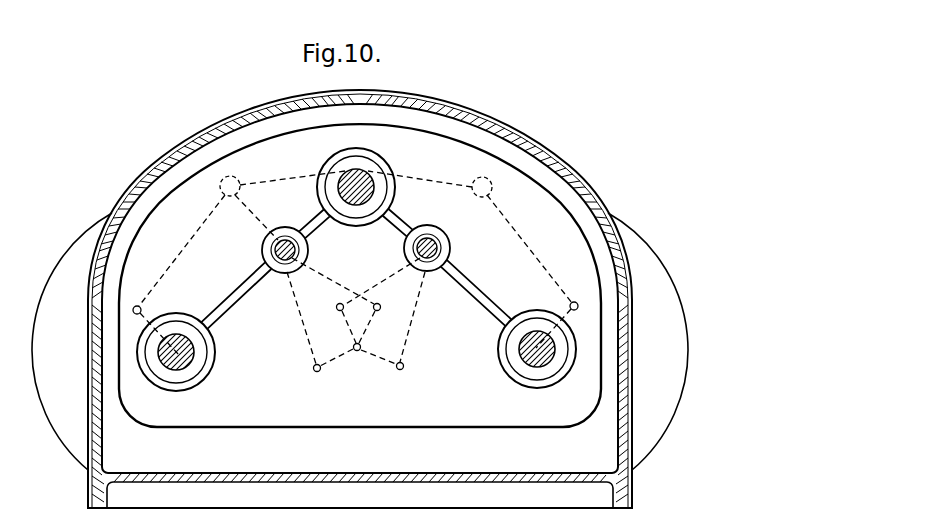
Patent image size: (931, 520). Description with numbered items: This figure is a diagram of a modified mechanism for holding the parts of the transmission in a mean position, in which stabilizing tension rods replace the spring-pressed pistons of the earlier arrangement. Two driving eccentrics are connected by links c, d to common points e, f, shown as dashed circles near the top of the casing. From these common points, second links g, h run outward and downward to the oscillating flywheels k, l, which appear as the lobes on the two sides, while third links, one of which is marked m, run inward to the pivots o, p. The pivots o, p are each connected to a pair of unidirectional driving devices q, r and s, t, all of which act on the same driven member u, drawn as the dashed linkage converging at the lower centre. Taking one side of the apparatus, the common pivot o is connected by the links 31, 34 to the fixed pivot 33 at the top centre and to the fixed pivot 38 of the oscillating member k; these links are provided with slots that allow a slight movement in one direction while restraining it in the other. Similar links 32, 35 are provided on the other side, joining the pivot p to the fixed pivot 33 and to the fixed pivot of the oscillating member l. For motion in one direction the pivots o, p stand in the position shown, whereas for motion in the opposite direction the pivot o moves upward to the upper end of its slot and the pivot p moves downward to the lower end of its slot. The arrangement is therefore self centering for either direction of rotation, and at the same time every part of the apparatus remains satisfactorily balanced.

The stabilizing tension rod 31 is at (319, 222).
The stabilizing tension rod 32 is at (406, 231).
The fixed pivot 33 is at (382, 160).
The stabilizing tension rod 34 is at (253, 283).
The stabilizing tension rod 35 is at (467, 283).
The fixed pivot of the oscillating member 38 is at (180, 362).
The pivot o is at (296, 250).
The pivot p is at (437, 249).
The common point e is at (220, 186).
The common point f is at (492, 190).
The link c is at (272, 178).
The link d is at (413, 195).
The second link g is at (188, 243).
The second link h is at (533, 239).
The third link m is at (252, 220).
The oscillating flywheel k is at (72, 341).
The oscillating flywheel l is at (648, 341).
The unidirectional driving device q is at (313, 369).
The unidirectional driving device r is at (380, 304).
The unidirectional driving device s is at (336, 305).
The unidirectional driving device t is at (402, 371).
The driven member u is at (356, 351).